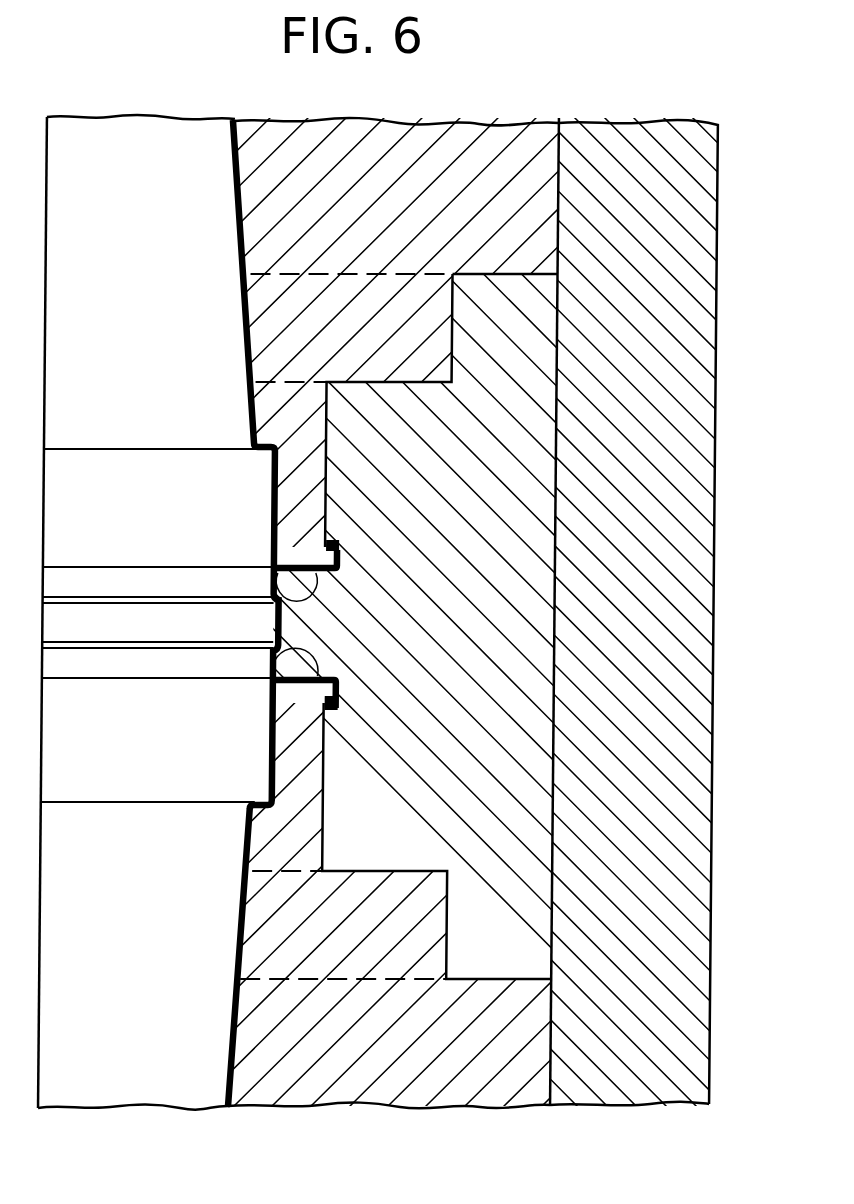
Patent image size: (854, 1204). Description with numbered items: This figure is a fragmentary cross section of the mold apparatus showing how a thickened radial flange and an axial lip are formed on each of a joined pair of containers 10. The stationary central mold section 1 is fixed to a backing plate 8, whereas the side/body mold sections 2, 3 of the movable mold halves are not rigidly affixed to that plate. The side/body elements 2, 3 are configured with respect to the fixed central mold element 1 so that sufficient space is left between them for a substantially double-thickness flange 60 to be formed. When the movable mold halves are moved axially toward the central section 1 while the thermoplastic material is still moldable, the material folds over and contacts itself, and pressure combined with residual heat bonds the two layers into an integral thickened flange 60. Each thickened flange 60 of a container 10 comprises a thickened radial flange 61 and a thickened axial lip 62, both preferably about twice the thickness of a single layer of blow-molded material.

The stationary central mold section 1 is at (517, 584).
The side/body mold section 2 is at (489, 1078).
The side/body mold section 3 is at (509, 167).
The backing plate 8 is at (701, 707).
The container 10 is at (119, 133).
The thickened flange 60 is at (281, 578).
The radial flange 61 is at (276, 661).
The axial lip 62 is at (285, 756).